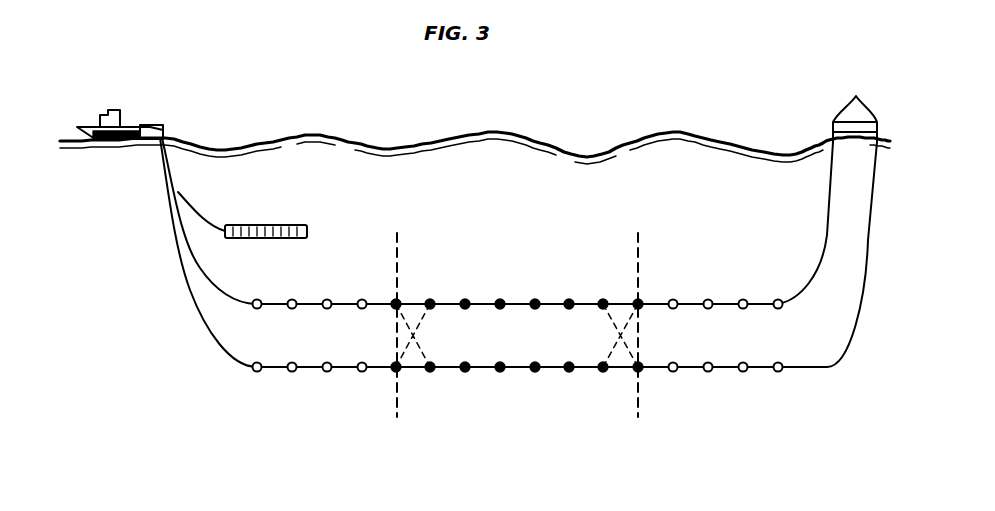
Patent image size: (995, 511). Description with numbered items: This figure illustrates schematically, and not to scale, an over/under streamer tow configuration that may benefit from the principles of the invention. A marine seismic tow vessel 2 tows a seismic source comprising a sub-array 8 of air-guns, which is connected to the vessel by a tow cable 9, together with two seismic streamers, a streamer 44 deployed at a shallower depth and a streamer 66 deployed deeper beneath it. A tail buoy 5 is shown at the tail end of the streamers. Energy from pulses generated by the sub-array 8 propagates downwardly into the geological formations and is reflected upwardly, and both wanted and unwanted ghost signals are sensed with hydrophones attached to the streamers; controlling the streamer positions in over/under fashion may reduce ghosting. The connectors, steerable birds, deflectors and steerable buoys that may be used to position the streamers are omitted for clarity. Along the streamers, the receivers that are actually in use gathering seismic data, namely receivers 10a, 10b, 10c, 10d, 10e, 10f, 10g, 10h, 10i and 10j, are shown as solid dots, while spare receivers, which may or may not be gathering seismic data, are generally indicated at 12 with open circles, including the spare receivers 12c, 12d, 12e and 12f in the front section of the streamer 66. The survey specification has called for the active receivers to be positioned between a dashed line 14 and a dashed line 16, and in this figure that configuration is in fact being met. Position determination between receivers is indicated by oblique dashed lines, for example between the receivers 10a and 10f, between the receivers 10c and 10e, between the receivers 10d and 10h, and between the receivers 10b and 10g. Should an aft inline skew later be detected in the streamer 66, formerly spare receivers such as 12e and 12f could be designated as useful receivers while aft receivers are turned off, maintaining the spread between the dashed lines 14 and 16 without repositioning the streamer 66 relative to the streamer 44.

The marine seismic tow vessel 2 is at (86, 123).
The tail buoy 5 is at (856, 98).
The sub-array 8 is at (276, 223).
The tow cable 9 is at (178, 192).
The receiver 10a is at (430, 300).
The receiver 10b is at (601, 302).
The receiver 10c is at (431, 371).
The receiver 10d is at (603, 371).
The receiver 10e is at (394, 302).
The receiver 10f is at (394, 370).
The receiver 10g is at (642, 370).
The receiver 10h is at (641, 302).
The receiver 10i is at (569, 371).
The receiver 10j is at (535, 371).
The spare receiver 12 is at (777, 301).
The spare receiver 12c is at (255, 371).
The spare receiver 12d is at (291, 371).
The spare receiver 12e is at (326, 371).
The spare receiver 12f is at (361, 371).
The dashed line 14 is at (400, 258).
The dashed line 16 is at (633, 258).
The streamer 44 is at (483, 304).
The streamer 66 is at (480, 369).